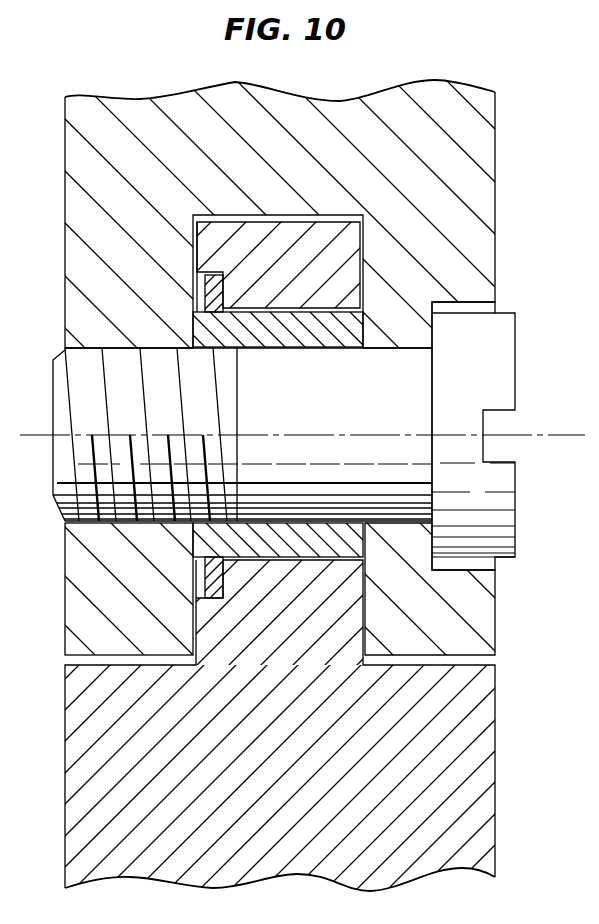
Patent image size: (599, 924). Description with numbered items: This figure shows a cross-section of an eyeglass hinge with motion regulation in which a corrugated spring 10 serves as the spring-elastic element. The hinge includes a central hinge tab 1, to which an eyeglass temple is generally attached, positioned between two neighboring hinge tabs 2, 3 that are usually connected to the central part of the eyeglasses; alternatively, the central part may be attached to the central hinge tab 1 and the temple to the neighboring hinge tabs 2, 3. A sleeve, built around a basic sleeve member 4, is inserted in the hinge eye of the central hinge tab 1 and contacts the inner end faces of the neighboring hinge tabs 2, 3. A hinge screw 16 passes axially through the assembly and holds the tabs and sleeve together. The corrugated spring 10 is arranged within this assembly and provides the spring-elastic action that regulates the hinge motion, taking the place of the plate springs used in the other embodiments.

The central hinge tab 1 is at (337, 257).
The neighboring hinge tab 2 is at (85, 617).
The neighboring hinge tab 3 is at (483, 618).
The basic sleeve member 4 is at (278, 331).
The corrugated spring 10 is at (215, 575).
The hinge screw 16 is at (502, 343).